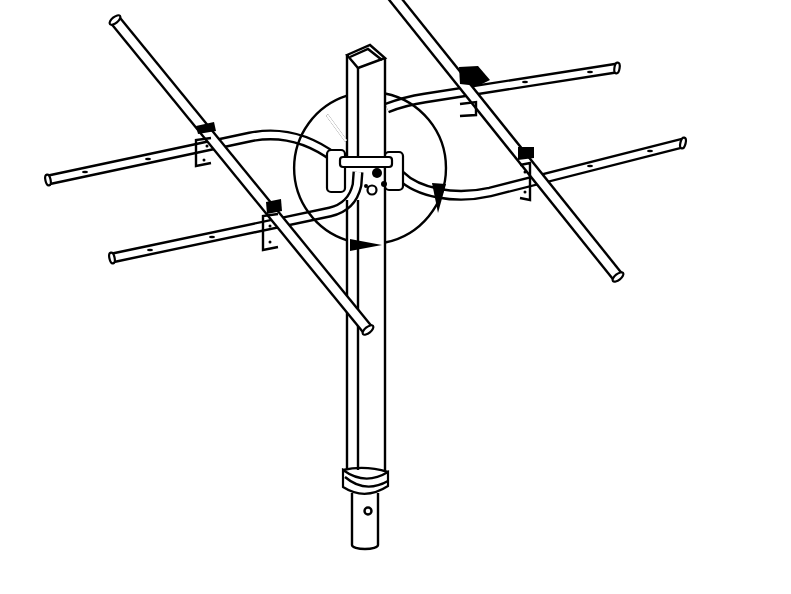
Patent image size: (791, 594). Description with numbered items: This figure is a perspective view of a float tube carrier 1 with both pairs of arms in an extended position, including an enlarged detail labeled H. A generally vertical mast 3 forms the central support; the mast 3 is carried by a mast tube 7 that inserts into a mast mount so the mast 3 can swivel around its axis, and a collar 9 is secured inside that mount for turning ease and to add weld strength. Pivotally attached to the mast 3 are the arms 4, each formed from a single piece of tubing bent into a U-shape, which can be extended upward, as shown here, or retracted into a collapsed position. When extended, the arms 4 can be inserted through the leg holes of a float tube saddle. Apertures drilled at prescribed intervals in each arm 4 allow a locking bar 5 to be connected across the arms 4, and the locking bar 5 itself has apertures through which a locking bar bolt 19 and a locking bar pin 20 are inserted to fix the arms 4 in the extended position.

The float tube carrier 1 is at (578, 352).
The mast 3 is at (380, 363).
The arm 4 is at (197, 248).
The locking bar 5 is at (177, 85).
The mast tube 7 is at (371, 528).
The mast collar 9 is at (388, 476).
The locking bar bolt 19 is at (207, 128).
The locking bar pin 20 is at (197, 141).